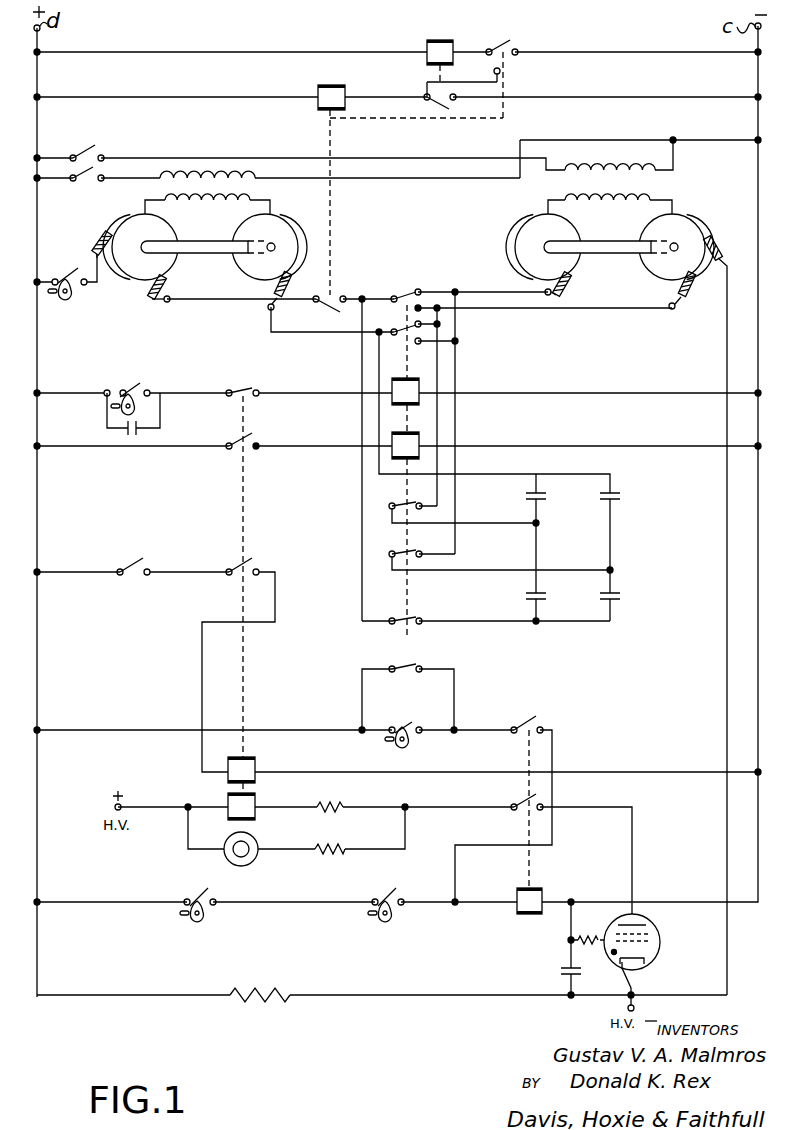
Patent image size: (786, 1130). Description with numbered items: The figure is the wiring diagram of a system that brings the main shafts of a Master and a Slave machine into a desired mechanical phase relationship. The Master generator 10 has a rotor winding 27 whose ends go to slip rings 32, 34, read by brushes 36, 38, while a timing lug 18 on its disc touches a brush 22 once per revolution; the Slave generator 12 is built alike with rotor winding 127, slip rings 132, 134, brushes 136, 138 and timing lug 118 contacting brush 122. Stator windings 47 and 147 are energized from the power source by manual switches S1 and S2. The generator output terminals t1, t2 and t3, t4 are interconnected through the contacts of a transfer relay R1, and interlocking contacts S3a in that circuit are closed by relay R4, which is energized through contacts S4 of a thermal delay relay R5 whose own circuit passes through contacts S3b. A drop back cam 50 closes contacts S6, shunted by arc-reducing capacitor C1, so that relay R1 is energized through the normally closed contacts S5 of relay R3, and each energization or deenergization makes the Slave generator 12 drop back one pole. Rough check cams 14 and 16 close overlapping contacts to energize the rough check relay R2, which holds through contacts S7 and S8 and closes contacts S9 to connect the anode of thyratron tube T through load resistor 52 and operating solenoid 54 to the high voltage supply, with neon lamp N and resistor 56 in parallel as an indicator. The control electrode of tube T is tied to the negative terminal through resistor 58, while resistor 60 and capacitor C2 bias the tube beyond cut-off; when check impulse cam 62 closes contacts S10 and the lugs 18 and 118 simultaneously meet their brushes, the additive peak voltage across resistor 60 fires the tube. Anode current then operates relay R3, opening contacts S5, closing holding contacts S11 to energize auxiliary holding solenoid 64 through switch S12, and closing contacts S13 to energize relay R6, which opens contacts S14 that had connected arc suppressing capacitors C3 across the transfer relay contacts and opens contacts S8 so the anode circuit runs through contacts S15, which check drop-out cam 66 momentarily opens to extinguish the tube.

The Master generator 10 is at (215, 255).
The Slave generator 12 is at (614, 238).
The rough check cam 14 is at (197, 921).
The rough check cam 16 is at (385, 921).
The timing lug 18 is at (107, 233).
The brush 22 is at (97, 246).
The rotor winding 27 is at (211, 204).
The slip ring 32 is at (134, 276).
The slip ring 34 is at (285, 222).
The brush 36 is at (152, 298).
The brush 38 is at (276, 290).
The stator winding 47 is at (200, 173).
The drop back cam 50 is at (137, 409).
The load resistor 52 is at (340, 805).
The operating solenoid 54 is at (256, 801).
The current limiting resistor 56 is at (338, 849).
The current limiting resistor 58 is at (588, 936).
The resistor 60 is at (257, 994).
The check impulse cam 62 is at (63, 303).
The auxiliary holding solenoid 64 is at (256, 767).
The check drop-out cam 66 is at (409, 745).
The timing lug 118 is at (711, 242).
The brush 122 is at (714, 260).
The rotor winding 127 is at (608, 204).
The slip ring 132 is at (527, 227).
The slip ring 134 is at (682, 222).
The brush 136 is at (566, 289).
The brush 138 is at (693, 294).
The stator winding 147 is at (603, 164).
The transfer relay R1 is at (428, 385).
The rough check relay R2 is at (548, 880).
The relay R3 is at (216, 781).
The interlocking relay R4 is at (328, 82).
The time delay thermal relay R5 is at (421, 41).
The holding relay R6 is at (386, 457).
The manually operated switch S1 is at (91, 150).
The manually operated switch S2 is at (82, 183).
The interlocking contacts S3a is at (343, 298).
The contacts S3b is at (508, 45).
The contacts S4 is at (435, 112).
The contacts S5 is at (238, 390).
The cam operated contacts S6 is at (136, 391).
The holding contacts S7 is at (538, 721).
The contacts S8 is at (415, 664).
The contacts S9 is at (519, 800).
The cam operated contacts S10 is at (75, 289).
The holding contacts S11 is at (256, 565).
The manually operated switch S12 is at (148, 565).
The contacts S13 is at (255, 440).
The contacts S14 is at (398, 620).
The contacts S15 is at (416, 734).
The arc-reducing capacitor C1 is at (127, 437).
The capacitor C2 is at (561, 974).
The arc suppressing capacitors C3 is at (598, 497).
The neon lamp N is at (258, 845).
The tube T is at (660, 945).
The output terminal t1 is at (167, 302).
The output terminal t2 is at (274, 307).
The output terminal t3 is at (545, 292).
The output terminal t4 is at (670, 309).